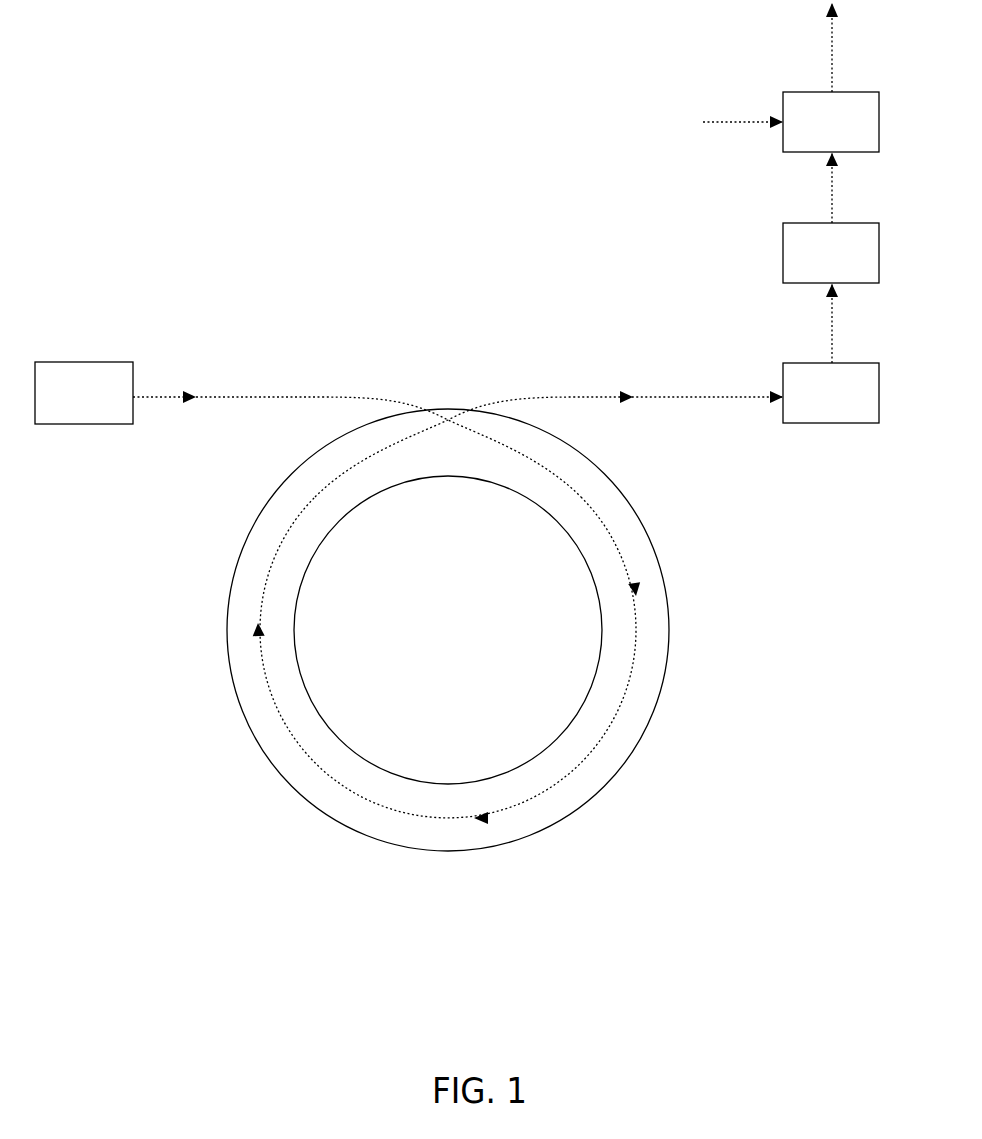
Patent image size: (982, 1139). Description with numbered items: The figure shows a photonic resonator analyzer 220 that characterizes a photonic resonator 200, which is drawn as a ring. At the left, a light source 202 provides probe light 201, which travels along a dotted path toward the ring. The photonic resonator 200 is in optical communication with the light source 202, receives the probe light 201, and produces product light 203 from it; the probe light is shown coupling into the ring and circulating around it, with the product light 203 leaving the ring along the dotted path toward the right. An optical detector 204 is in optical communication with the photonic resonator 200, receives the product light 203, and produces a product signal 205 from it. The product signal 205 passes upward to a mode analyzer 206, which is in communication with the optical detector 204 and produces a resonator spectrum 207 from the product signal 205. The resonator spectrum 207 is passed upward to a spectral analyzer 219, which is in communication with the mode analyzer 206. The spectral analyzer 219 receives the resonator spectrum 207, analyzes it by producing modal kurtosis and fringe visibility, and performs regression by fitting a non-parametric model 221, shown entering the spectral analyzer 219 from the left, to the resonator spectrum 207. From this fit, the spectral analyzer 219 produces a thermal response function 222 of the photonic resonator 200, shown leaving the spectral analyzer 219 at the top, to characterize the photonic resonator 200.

The photonic resonator 200 is at (275, 748).
The probe light 201 is at (252, 398).
The light source 202 is at (84, 393).
The product light 203 is at (682, 396).
The optical detector 204 is at (831, 393).
The product signal 205 is at (832, 338).
The mode analyzer 206 is at (831, 253).
The resonator spectrum 207 is at (832, 198).
The spectral analyzer 219 is at (831, 122).
The photonic resonator analyzer 220 is at (462, 427).
The non-parametric model 221 is at (734, 121).
The thermal response function 222 is at (832, 53).